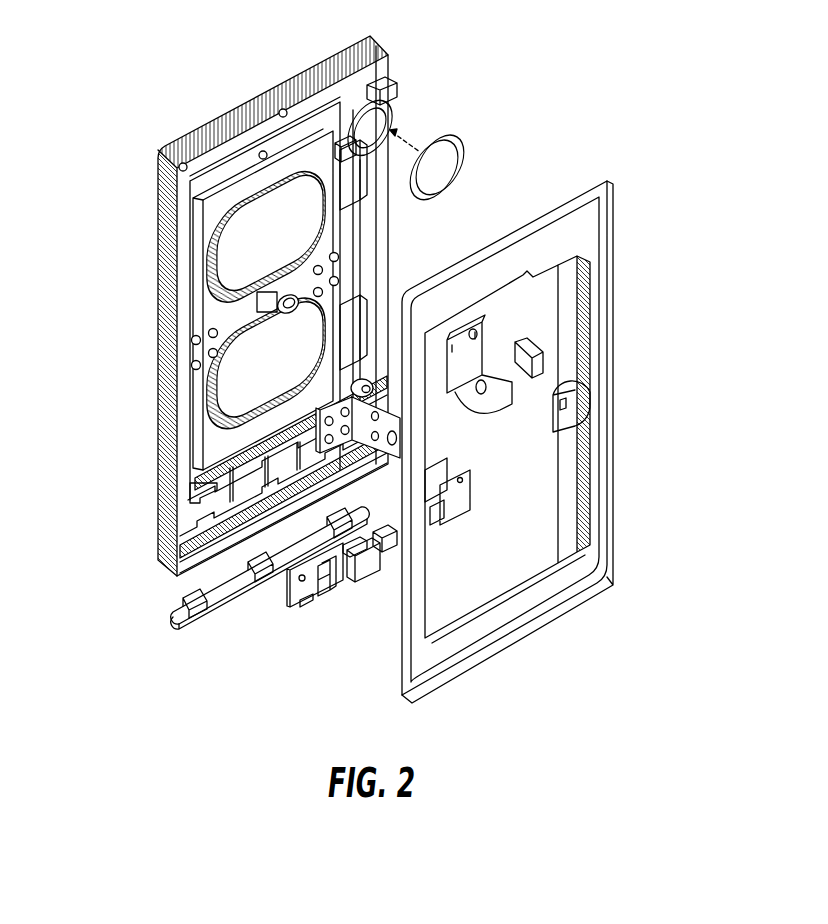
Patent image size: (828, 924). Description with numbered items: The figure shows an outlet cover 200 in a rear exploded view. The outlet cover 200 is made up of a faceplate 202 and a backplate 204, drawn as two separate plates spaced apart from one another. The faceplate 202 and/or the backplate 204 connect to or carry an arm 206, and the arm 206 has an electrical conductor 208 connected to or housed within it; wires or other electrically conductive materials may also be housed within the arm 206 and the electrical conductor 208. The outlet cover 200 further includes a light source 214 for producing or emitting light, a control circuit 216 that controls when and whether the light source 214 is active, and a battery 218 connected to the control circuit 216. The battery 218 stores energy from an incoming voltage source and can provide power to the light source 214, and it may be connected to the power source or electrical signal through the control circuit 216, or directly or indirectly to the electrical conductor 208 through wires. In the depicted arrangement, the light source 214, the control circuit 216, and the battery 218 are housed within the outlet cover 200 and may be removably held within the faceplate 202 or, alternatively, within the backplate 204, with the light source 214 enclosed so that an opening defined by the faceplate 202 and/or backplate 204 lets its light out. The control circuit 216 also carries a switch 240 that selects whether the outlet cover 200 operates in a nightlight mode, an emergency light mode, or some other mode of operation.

The outlet cover 200 is at (156, 52).
The faceplate 202 is at (257, 103).
The backplate 204 is at (572, 200).
The arm 206 is at (470, 413).
The electrical conductor 208 is at (546, 360).
The light source 214 is at (173, 609).
The control circuit 216 is at (291, 619).
The battery 218 is at (440, 134).
The switch 240 is at (341, 571).